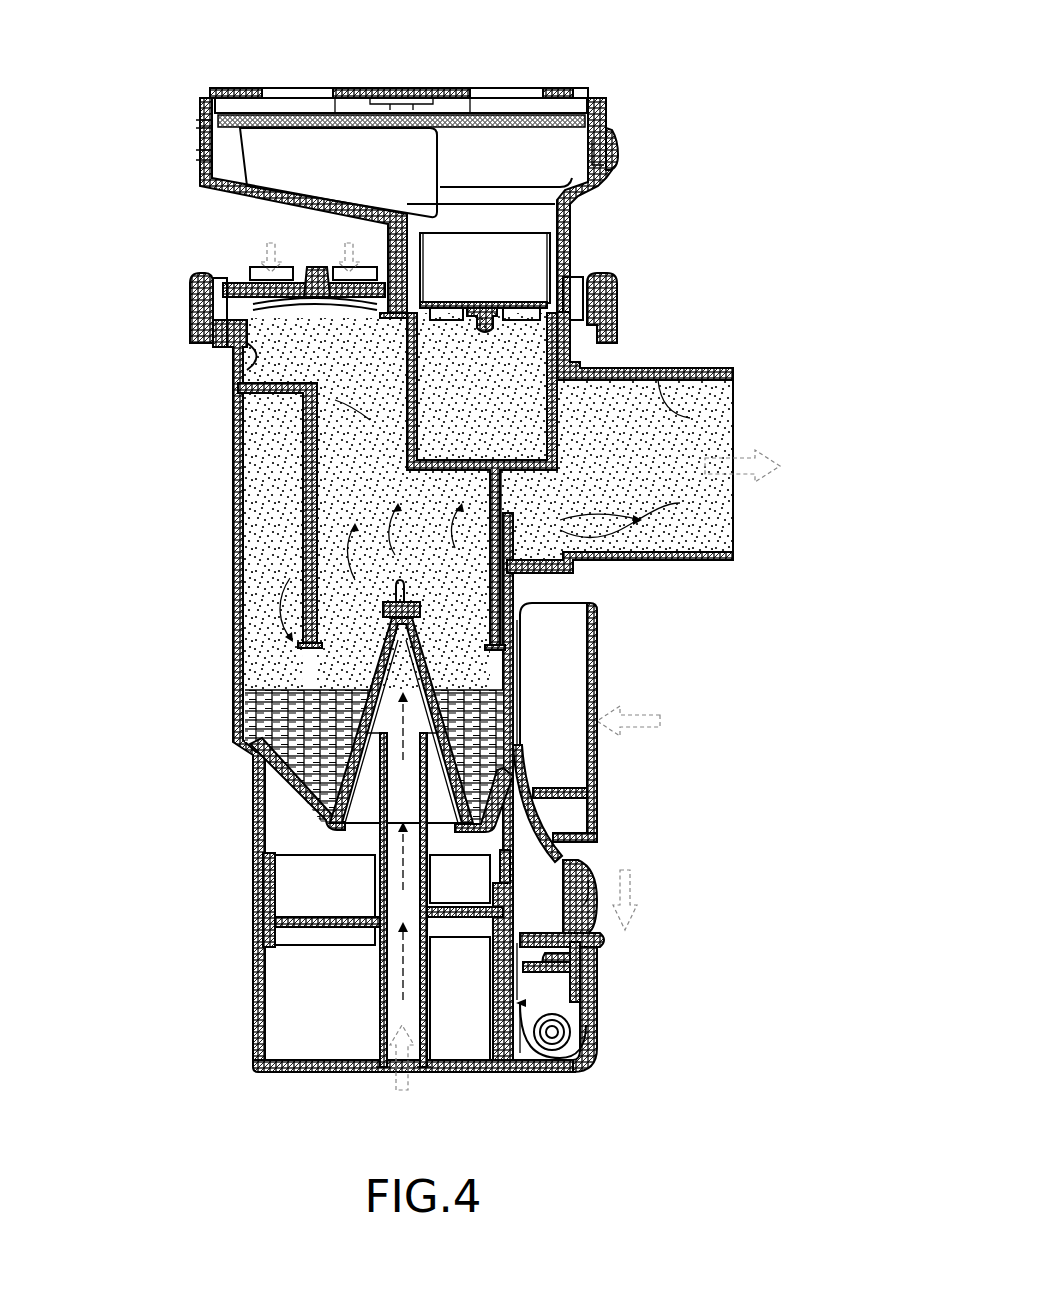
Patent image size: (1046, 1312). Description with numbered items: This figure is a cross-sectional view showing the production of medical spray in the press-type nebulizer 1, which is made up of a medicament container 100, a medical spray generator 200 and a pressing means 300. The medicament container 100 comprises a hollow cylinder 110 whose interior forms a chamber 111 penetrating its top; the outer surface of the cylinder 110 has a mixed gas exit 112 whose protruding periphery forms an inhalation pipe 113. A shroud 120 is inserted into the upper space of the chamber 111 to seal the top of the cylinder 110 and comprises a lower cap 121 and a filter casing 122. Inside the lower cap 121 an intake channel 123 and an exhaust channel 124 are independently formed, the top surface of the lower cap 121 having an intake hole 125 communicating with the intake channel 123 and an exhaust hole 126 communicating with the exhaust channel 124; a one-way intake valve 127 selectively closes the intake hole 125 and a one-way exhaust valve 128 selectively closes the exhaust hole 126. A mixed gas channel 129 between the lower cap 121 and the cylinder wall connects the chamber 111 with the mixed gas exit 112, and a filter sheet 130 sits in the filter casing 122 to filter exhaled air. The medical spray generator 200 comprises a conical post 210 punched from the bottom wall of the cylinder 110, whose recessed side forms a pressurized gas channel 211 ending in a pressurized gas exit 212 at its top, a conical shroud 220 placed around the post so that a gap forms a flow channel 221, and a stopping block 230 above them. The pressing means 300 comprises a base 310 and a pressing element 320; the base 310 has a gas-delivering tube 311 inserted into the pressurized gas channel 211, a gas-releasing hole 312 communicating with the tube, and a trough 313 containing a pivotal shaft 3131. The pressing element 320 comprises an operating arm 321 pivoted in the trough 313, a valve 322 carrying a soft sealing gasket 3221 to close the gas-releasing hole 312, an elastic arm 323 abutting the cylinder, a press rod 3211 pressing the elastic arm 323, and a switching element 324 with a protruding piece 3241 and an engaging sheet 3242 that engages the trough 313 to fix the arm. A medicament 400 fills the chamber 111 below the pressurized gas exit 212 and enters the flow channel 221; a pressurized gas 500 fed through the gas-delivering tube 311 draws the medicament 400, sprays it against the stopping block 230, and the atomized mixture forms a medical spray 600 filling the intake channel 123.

The nebulizer 1 is at (759, 80).
The medicament container 100 is at (456, 166).
The cylinder 110 is at (745, 397).
The chamber 111 is at (500, 667).
The mixed gas exit 112 is at (688, 418).
The inhalation pipe 113 is at (708, 560).
The shroud 120 is at (630, 287).
The lower cap 121 is at (280, 440).
The filter casing 122 is at (600, 175).
The intake channel 123 is at (262, 365).
The exhaust channel 124 is at (520, 400).
The intake hole 125 is at (290, 290).
The exhaust hole 126 is at (535, 322).
The one-way intake valve 127 is at (250, 322).
The one-way exhaust valve 128 is at (513, 310).
The mixed gas channel 129 is at (680, 503).
The filter sheet 130 is at (505, 118).
The medical spray generator 200 is at (299, 667).
The conical post 210 is at (357, 777).
The pressurized gas channel 211 is at (350, 725).
The pressurized gas exit 212 is at (395, 612).
The conical shroud 220 is at (250, 747).
The flow channel 221 is at (360, 657).
The stopping block 230 is at (396, 585).
The pressing means 300 is at (677, 873).
The base 310 is at (643, 999).
The gas-delivering tube 311 is at (372, 1062).
The gas-releasing hole 312 is at (360, 922).
The trough 313 is at (520, 1045).
The pivotal shaft 3131 is at (568, 1025).
The pressing element 320 is at (640, 732).
The operating arm 321 is at (590, 660).
The valve 322 is at (517, 985).
The sealing gasket 3221 is at (487, 925).
The elastic arm 323 is at (520, 720).
The press rod 3211 is at (553, 793).
The switching element 324 is at (605, 897).
The protruding piece 3241 is at (608, 940).
The engaging sheet 3242 is at (550, 957).
The medicament 400 is at (257, 711).
The pressurized gas 500 is at (400, 987).
The medical spray 600 is at (335, 405).